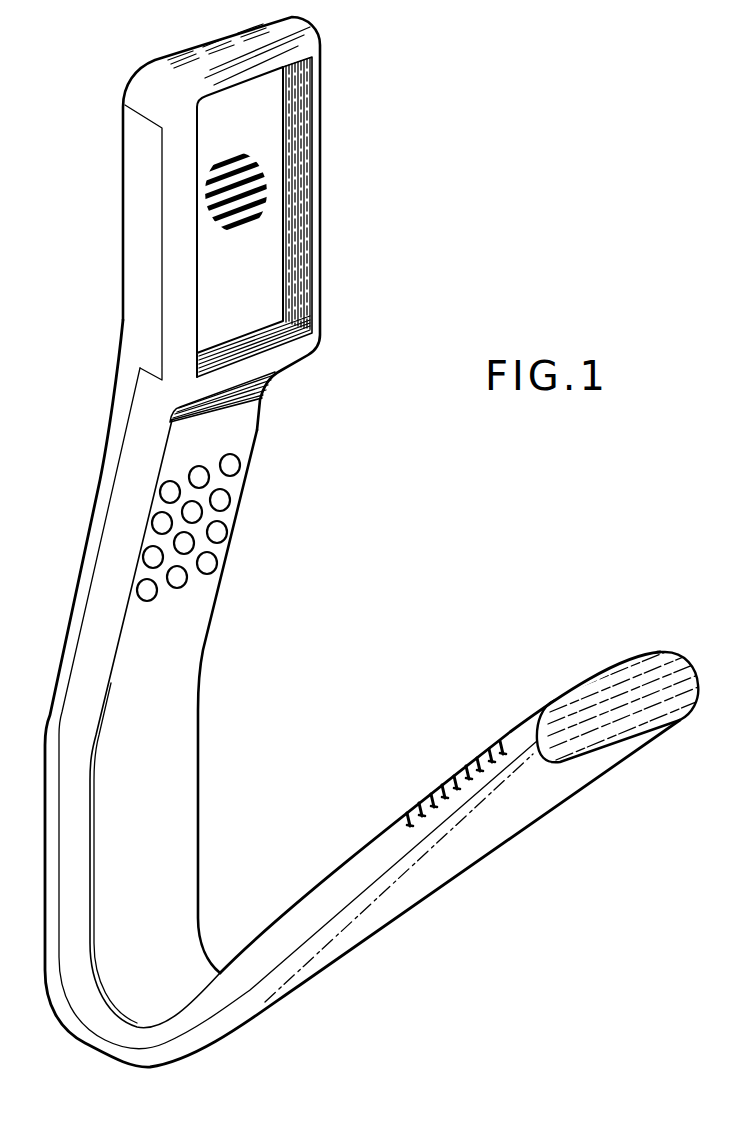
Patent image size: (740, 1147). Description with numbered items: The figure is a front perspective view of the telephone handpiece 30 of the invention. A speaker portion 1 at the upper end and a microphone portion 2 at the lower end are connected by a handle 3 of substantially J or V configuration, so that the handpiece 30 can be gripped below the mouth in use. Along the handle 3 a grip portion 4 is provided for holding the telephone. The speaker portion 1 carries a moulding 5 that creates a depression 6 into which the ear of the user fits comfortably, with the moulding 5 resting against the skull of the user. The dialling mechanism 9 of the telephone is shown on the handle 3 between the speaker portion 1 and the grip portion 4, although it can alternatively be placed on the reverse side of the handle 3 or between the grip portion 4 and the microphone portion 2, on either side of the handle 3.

The speaker portion 1 is at (108, 211).
The microphone portion 2 is at (562, 808).
The handle 3 is at (82, 537).
The grip portion 4 is at (150, 870).
The moulding 5 is at (307, 190).
The depression 6 is at (254, 134).
The dialling mechanism 9 is at (223, 500).
The handpiece 30 is at (247, 646).